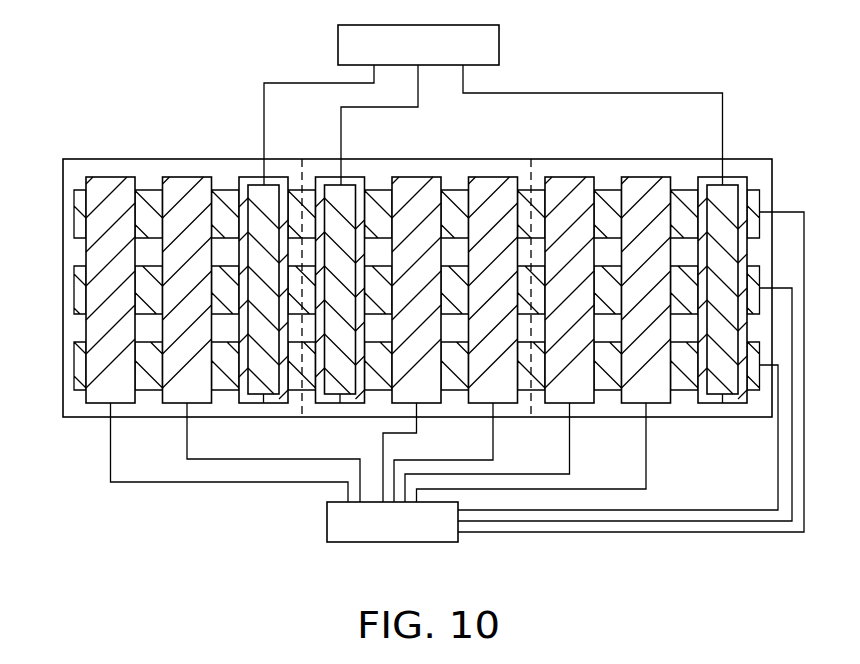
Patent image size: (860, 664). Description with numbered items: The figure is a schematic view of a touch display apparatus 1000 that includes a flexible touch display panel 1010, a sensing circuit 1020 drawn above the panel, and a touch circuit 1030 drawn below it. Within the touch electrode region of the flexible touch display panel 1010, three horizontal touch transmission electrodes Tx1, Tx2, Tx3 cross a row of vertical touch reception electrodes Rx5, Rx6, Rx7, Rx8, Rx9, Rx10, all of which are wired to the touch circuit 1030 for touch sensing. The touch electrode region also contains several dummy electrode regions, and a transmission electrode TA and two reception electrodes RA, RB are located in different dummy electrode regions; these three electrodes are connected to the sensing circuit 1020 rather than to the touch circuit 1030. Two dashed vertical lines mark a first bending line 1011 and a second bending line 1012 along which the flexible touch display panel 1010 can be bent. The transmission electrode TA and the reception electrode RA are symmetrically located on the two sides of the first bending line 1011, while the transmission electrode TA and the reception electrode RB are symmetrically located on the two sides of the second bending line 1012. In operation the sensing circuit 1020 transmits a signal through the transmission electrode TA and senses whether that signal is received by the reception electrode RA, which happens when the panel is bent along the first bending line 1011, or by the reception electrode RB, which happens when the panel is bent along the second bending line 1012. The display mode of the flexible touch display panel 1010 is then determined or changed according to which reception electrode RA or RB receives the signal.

The touch display apparatus 1000 is at (116, 574).
The flexible touch display panel 1010 is at (762, 159).
The first bending line 1011 is at (315, 145).
The second bending line 1012 is at (531, 159).
The sensing circuit 1020 is at (338, 45).
The touch circuit 1030 is at (327, 522).
The touch transmission electrode Tx1 is at (74, 212).
The touch transmission electrode Tx2 is at (74, 289).
The touch transmission electrode Tx3 is at (74, 365).
The touch reception electrode Rx5 is at (110, 177).
The touch reception electrode Rx6 is at (187, 177).
The touch reception electrode Rx7 is at (415, 177).
The touch reception electrode Rx8 is at (491, 177).
The touch reception electrode Rx9 is at (569, 177).
The touch reception electrode Rx10 is at (646, 177).
The reception electrode RA is at (264, 403).
The transmission electrode TA is at (340, 403).
The reception electrode RB is at (722, 403).